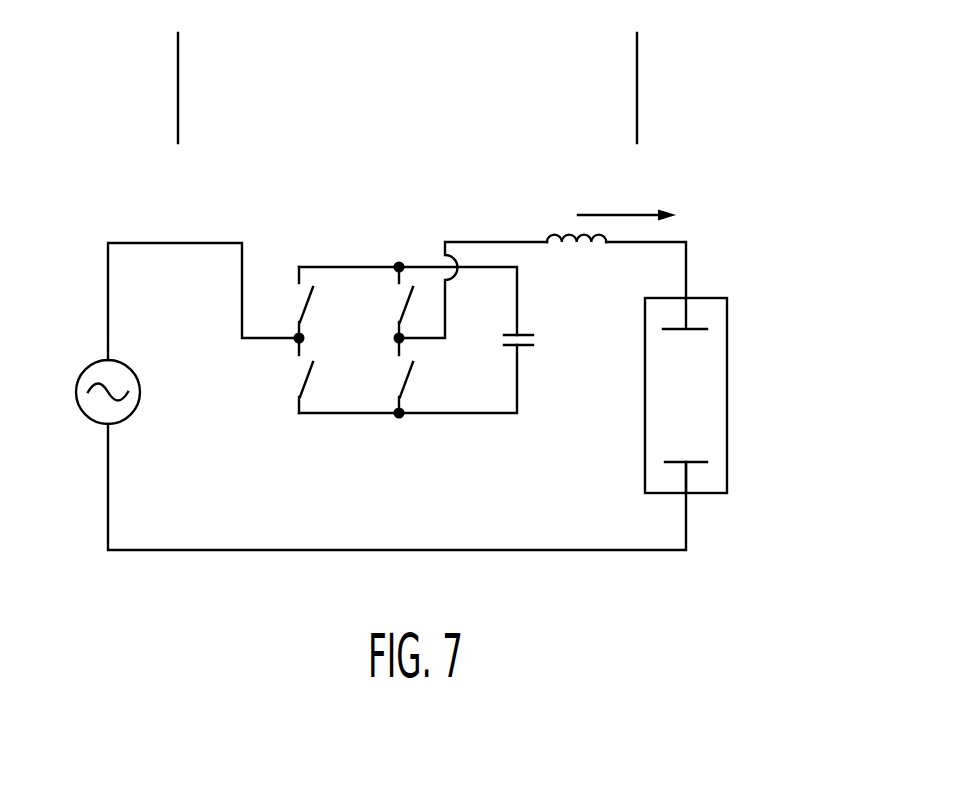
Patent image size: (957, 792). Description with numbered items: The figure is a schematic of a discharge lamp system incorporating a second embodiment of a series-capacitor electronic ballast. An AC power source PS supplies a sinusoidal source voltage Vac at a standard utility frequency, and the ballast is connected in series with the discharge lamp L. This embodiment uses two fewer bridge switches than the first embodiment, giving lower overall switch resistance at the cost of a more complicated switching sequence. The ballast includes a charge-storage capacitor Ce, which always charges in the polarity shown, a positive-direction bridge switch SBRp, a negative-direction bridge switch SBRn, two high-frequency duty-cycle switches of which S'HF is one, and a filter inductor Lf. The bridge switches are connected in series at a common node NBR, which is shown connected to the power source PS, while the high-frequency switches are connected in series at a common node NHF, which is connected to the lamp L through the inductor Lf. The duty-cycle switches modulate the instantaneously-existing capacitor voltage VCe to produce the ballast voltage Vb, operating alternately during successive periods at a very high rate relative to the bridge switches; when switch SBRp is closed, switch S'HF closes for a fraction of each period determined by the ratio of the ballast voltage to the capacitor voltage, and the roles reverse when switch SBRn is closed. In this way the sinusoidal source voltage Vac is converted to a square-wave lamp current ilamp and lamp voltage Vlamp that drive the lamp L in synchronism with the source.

The AC power source PS is at (135, 405).
The source voltage Vac is at (63, 392).
The ballast voltage Vb is at (637, 90).
The lamp current ilamp is at (627, 176).
The positive-direction bridge switch SBRp is at (284, 302).
The negative-direction bridge switch SBRn is at (284, 375).
The common node of bridge switches NBR is at (320, 338).
The high-frequency duty-cycle switch S'HF is at (386, 340).
The common node of high-frequency switches NHF is at (403, 341).
The capacitor voltage VCe is at (465, 343).
The charge-storage capacitor Ce is at (522, 337).
The filter inductor Lf is at (576, 260).
The discharge lamp L is at (674, 395).
The lamp voltage Vlamp is at (766, 398).